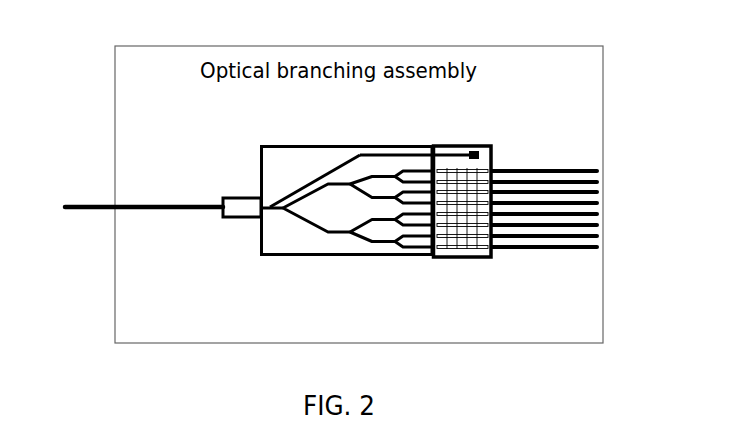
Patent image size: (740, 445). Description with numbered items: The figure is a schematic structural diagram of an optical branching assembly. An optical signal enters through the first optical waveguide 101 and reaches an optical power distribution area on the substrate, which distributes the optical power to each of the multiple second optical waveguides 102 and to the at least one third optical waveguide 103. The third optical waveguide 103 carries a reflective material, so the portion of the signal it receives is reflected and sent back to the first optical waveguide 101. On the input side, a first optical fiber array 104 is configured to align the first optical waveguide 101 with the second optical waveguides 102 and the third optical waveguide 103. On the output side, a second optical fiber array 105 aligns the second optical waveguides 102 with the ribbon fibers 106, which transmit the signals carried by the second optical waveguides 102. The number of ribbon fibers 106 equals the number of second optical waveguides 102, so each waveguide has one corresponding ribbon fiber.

The first optical waveguide 101 is at (83, 208).
The second optical waveguides 102 is at (412, 257).
The third optical waveguide 103 is at (477, 145).
The first optical fiber array 104 is at (243, 197).
The second optical fiber array 105 is at (450, 259).
The ribbon fibers 106 is at (588, 171).